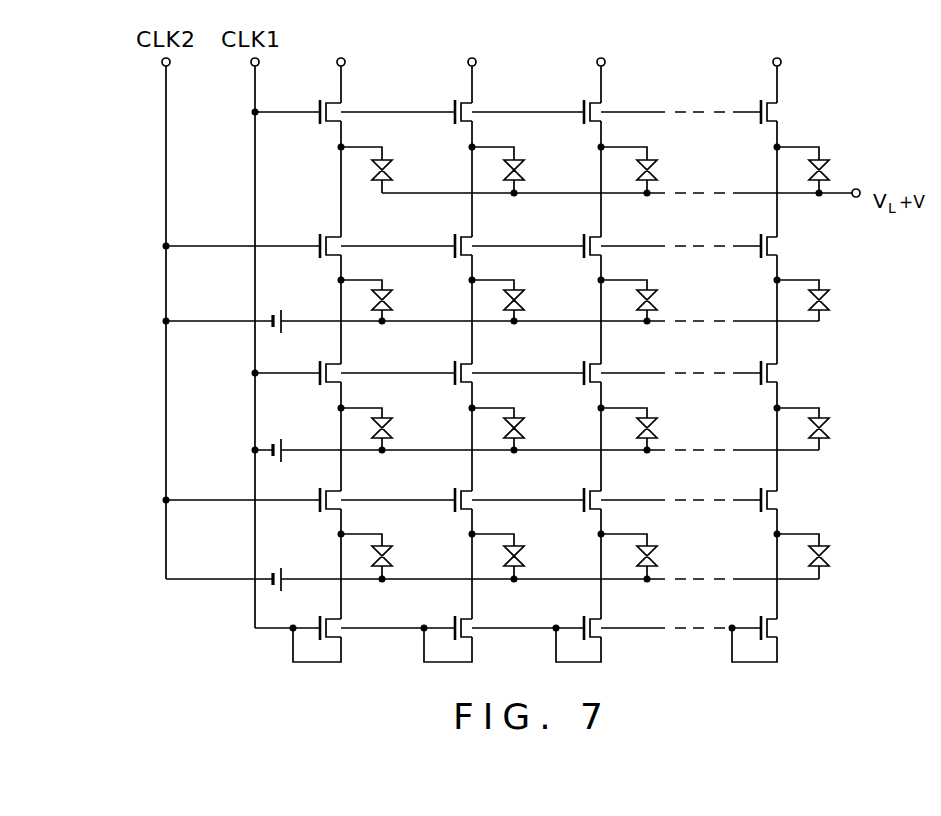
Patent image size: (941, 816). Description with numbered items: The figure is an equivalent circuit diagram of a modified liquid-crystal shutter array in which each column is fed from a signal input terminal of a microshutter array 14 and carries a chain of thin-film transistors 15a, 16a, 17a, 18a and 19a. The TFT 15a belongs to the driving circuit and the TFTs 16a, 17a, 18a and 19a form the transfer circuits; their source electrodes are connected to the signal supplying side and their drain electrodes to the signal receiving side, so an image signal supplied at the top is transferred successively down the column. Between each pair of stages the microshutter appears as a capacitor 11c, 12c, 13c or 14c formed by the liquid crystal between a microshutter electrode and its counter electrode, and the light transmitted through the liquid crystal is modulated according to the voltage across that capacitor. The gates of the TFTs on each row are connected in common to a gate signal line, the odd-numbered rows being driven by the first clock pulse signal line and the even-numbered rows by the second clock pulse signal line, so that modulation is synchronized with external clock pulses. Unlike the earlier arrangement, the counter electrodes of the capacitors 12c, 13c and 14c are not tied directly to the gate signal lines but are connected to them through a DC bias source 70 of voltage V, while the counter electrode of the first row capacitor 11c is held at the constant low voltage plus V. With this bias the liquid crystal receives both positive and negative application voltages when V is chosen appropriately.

The microshutter array 14 is at (561, 65).
The TFT 15a is at (574, 106).
The TFT 16a is at (574, 240).
The TFT 17a is at (574, 367).
The TFT 18a is at (574, 494).
The TFT 19a is at (574, 622).
The capacitor due to liquid crystal 11c is at (607, 170).
The capacitor due to liquid crystal 12c is at (607, 301).
The capacitor due to liquid crystal 13c is at (607, 429).
The capacitor due to liquid crystal 14c is at (607, 557).
The DC bias source 70 is at (279, 445).